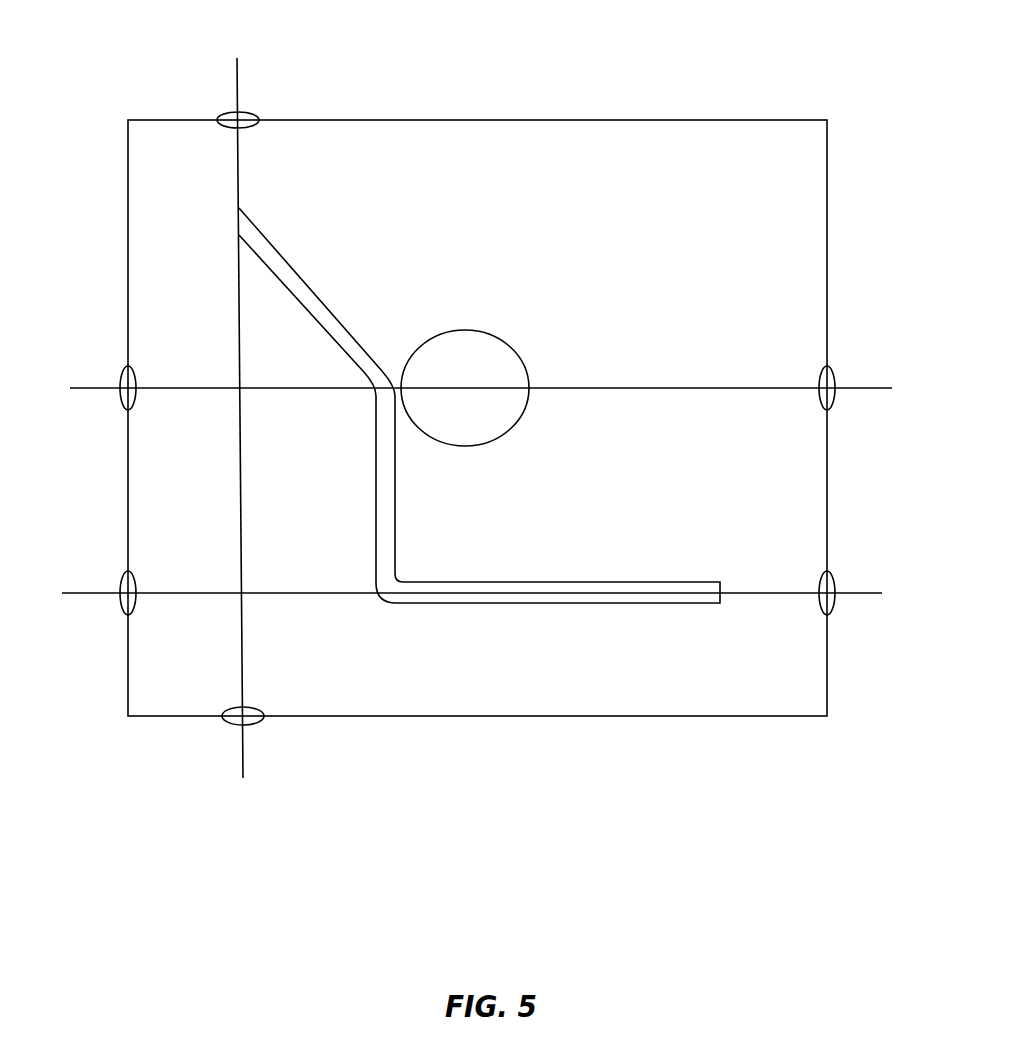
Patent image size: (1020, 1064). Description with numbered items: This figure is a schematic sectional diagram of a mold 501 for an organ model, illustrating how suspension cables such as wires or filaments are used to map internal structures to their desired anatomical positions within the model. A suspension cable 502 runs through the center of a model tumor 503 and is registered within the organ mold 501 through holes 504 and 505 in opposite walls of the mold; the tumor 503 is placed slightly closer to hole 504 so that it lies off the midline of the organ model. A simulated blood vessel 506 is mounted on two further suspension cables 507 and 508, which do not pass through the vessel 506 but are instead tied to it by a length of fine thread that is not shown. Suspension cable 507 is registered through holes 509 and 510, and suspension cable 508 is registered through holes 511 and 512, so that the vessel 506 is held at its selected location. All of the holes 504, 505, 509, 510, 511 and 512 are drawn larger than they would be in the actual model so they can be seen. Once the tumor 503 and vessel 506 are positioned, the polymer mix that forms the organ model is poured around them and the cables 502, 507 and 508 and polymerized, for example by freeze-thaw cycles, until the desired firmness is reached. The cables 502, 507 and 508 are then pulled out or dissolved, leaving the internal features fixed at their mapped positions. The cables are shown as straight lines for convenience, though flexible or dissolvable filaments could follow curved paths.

The mold 501 is at (127, 117).
The suspension cable 502 is at (97, 391).
The model tumor 503 is at (468, 331).
The hole 504 is at (122, 377).
The hole 505 is at (834, 371).
The simulated blood vessel 506 is at (463, 604).
The suspension cable 507 is at (88, 590).
The suspension cable 508 is at (238, 72).
The hole 509 is at (254, 112).
The hole 510 is at (262, 722).
The hole 511 is at (121, 609).
The hole 512 is at (837, 611).